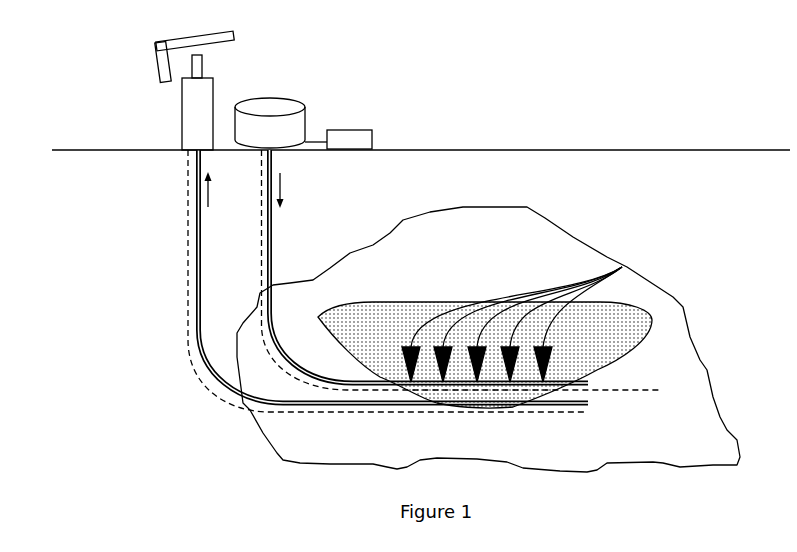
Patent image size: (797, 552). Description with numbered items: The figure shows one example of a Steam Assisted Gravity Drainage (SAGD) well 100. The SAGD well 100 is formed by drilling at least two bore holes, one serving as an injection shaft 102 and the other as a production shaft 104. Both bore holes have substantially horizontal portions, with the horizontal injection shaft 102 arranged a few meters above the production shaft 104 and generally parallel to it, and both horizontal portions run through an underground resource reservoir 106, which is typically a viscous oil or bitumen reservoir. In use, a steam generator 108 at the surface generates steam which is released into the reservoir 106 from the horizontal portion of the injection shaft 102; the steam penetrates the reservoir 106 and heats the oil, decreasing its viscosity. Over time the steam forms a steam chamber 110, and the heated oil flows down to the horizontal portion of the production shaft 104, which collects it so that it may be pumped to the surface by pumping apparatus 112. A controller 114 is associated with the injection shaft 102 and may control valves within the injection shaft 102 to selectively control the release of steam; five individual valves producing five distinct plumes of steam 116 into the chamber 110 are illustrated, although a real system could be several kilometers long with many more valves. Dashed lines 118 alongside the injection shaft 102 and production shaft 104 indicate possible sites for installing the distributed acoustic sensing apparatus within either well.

The Steam Assisted Gravity Drainage well 100 is at (563, 48).
The injection shaft 102 is at (270, 250).
The production shaft 104 is at (200, 170).
The underground resource reservoir 106 is at (517, 247).
The steam generator 108 is at (292, 98).
The steam chamber 110 is at (605, 344).
The pumping apparatus 112 is at (156, 50).
The controller 114 is at (352, 130).
The plumes of steam 116 is at (622, 267).
The dashed lines 118 is at (260, 217).